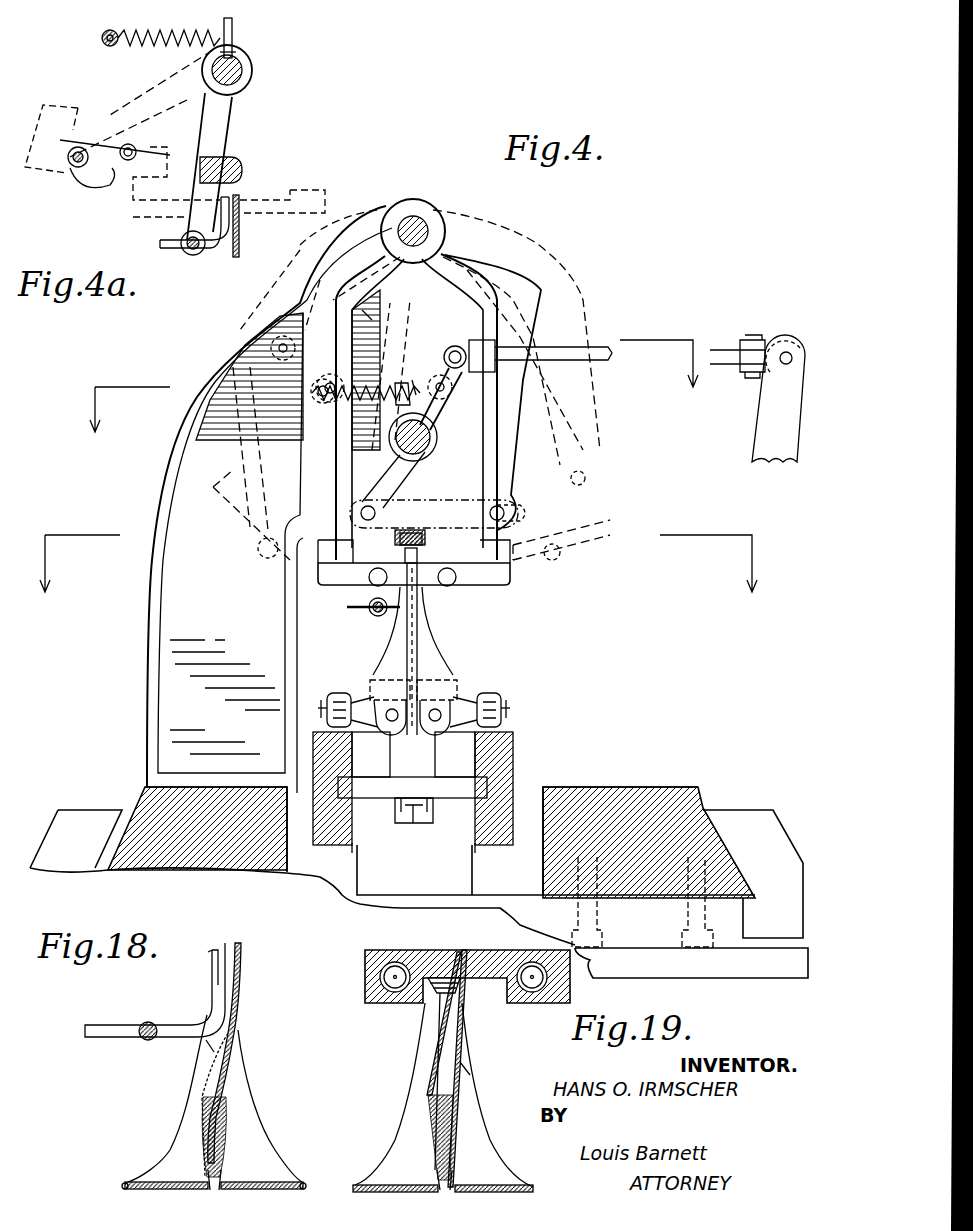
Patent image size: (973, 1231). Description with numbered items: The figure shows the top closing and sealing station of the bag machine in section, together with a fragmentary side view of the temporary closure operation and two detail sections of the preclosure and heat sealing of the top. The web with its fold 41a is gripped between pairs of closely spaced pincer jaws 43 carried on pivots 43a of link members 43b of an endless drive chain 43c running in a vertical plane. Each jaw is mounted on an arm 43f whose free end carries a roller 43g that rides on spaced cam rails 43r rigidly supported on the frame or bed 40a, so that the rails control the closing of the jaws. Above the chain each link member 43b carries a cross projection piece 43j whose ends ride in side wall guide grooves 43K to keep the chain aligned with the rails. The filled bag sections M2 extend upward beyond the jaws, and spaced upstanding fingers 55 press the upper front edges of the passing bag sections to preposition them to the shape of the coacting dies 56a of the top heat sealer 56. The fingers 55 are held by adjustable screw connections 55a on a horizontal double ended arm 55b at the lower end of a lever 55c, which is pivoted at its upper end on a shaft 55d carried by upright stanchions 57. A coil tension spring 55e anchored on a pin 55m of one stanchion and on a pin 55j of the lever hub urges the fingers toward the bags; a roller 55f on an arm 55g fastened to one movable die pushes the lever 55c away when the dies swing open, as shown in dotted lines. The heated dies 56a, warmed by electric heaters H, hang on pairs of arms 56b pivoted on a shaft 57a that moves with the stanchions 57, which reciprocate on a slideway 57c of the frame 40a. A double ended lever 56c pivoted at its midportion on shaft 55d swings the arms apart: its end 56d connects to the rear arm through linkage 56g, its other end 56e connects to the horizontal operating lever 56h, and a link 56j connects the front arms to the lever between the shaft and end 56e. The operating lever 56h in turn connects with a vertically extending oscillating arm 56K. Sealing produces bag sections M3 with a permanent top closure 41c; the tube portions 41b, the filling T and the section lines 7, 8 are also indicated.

In FIG. 4, the frame or bed 40a is at (540, 810).
In FIG. 18, the fold 41a is at (225, 1178).
In FIG. 19, the fold 41a is at (432, 1173).
In FIG. 18, the tube 41b is at (240, 945).
In FIG. 19, the permanent closure 41c is at (467, 980).
In FIG. 4, the pincer jaws 43 is at (423, 667).
In FIG. 18, the pincer jaws 43 is at (185, 1122).
In FIG. 19, the pincer jaws 43 is at (412, 1110).
In FIG. 4, the pivots 43a is at (440, 700).
In FIG. 4, the link members 43b is at (420, 760).
In FIG. 4, the endless drive chain 43c is at (410, 824).
In FIG. 4, the arm 43f is at (367, 687).
In FIG. 4, the roller 43g is at (333, 697).
In FIG. 4, the cross projection piece 43j is at (465, 798).
In FIG. 4, the side wall guide grooves 43K is at (345, 818).
In FIG. 4, the cam rails 43r is at (320, 748).
In FIG. 4A, the fingers 55 is at (240, 203).
In FIG. 4, the fingers 55 is at (420, 560).
In FIG. 18, the fingers 55 is at (218, 942).
In FIG. 4A, the adjustable screw connections 55a is at (195, 256).
In FIG. 4, the adjustable screw connections 55a is at (370, 614).
In FIG. 4A, the double ended arm 55b is at (186, 257).
In FIG. 18, the double ended arm 55b is at (149, 1022).
In FIG. 4A, the lever 55c is at (213, 138).
In FIG. 4, the lever 55c is at (365, 560).
In FIG. 4A, the shaft 55d is at (232, 72).
In FIG. 4, the shaft 55d is at (435, 455).
In FIG. 4A, the coil tension spring 55e is at (160, 30).
In FIG. 4, the coil tension spring 55e is at (350, 402).
In FIG. 4A, the roller 55f is at (200, 160).
In FIG. 4, the roller 55f is at (395, 540).
In FIG. 4A, the arm 55g is at (180, 222).
In FIG. 4A, the pin 55j is at (232, 22).
In FIG. 4, the pin 55j is at (417, 376).
In FIG. 4A, the pin 55m is at (112, 46).
In FIG. 4, the pin 55m is at (340, 400).
In FIG. 4, the top heat sealer 56 is at (559, 293).
In FIG. 4, the dies 56a is at (480, 585).
In FIG. 19, the dies 56a is at (475, 965).
In FIG. 4, the arms 56b is at (462, 262).
In FIG. 4, the double ended lever 56c is at (470, 380).
In FIG. 4, the lever end 56d is at (360, 502).
In FIG. 4, the lever end 56e is at (457, 347).
In FIG. 4, the linkage 56g is at (455, 500).
In FIG. 4, the operating lever 56h is at (560, 345).
In FIG. 4, the link 56j is at (400, 380).
In FIG. 4, the vertically extending arm 56K is at (760, 435).
In FIG. 4, the upright brackets or stanchions 57 is at (175, 615).
In FIG. 4, the shaft 57a is at (413, 231).
In FIG. 4, the slideway 57c is at (105, 828).
In FIG. 4, the section line 7 is at (393, 403).
In FIG. 4, the section line 8 is at (397, 580).
In FIG. 4, the electric heaters H is at (450, 586).
In FIG. 19, the electric heaters H is at (393, 988).
In FIG. 4A, the filled bag sections M2 is at (240, 237).
In FIG. 18, the filled bag sections M2 is at (203, 1053).
In FIG. 19, the bag sections M3 is at (476, 1075).
In FIG. 18, the filling T is at (217, 1090).
In FIG. 19, the filling T is at (440, 1095).